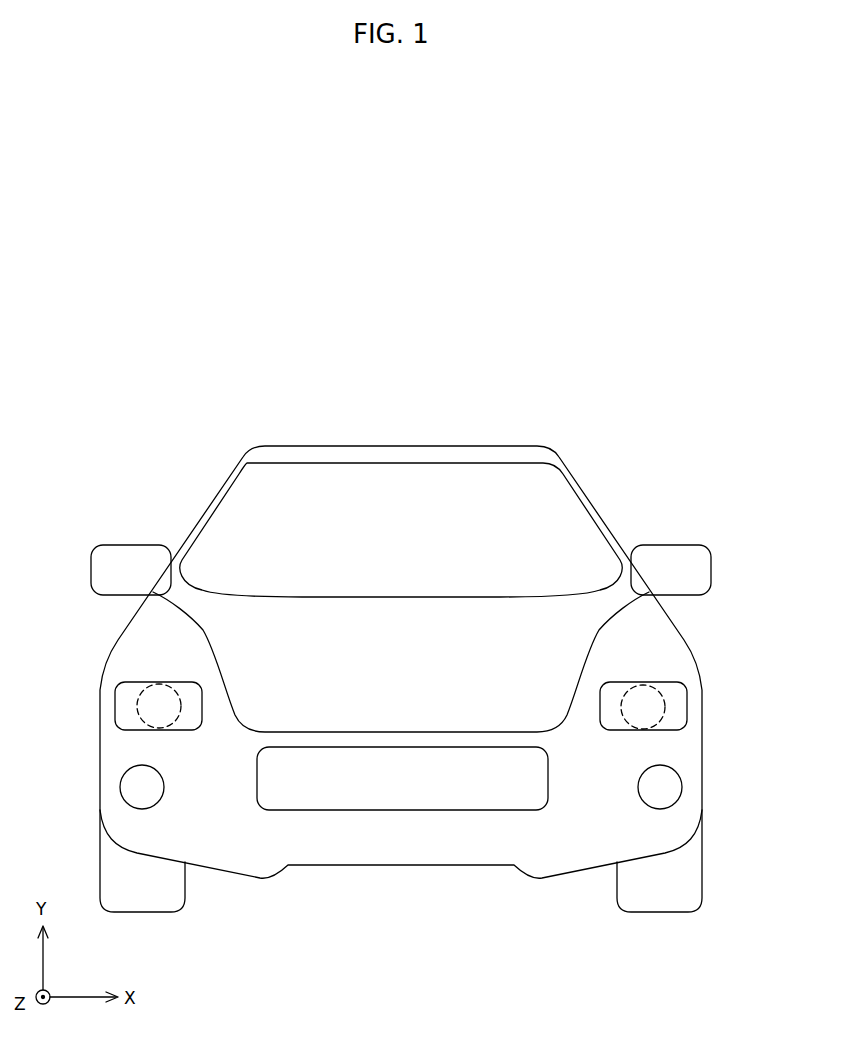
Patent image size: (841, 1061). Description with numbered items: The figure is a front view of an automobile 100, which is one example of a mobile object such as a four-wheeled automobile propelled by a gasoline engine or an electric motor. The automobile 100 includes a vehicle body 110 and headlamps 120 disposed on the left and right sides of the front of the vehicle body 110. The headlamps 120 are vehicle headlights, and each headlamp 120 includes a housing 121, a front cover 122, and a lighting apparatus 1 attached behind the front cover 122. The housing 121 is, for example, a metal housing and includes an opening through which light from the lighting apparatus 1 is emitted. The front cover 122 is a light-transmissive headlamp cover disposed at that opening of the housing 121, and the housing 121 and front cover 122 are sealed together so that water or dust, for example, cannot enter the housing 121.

The automobile 100 is at (651, 421).
The vehicle body 110 is at (685, 640).
The headlamp 120 is at (157, 680).
The housing 121 is at (687, 686).
The front cover 122 is at (673, 708).
The lighting apparatus 1 is at (665, 712).